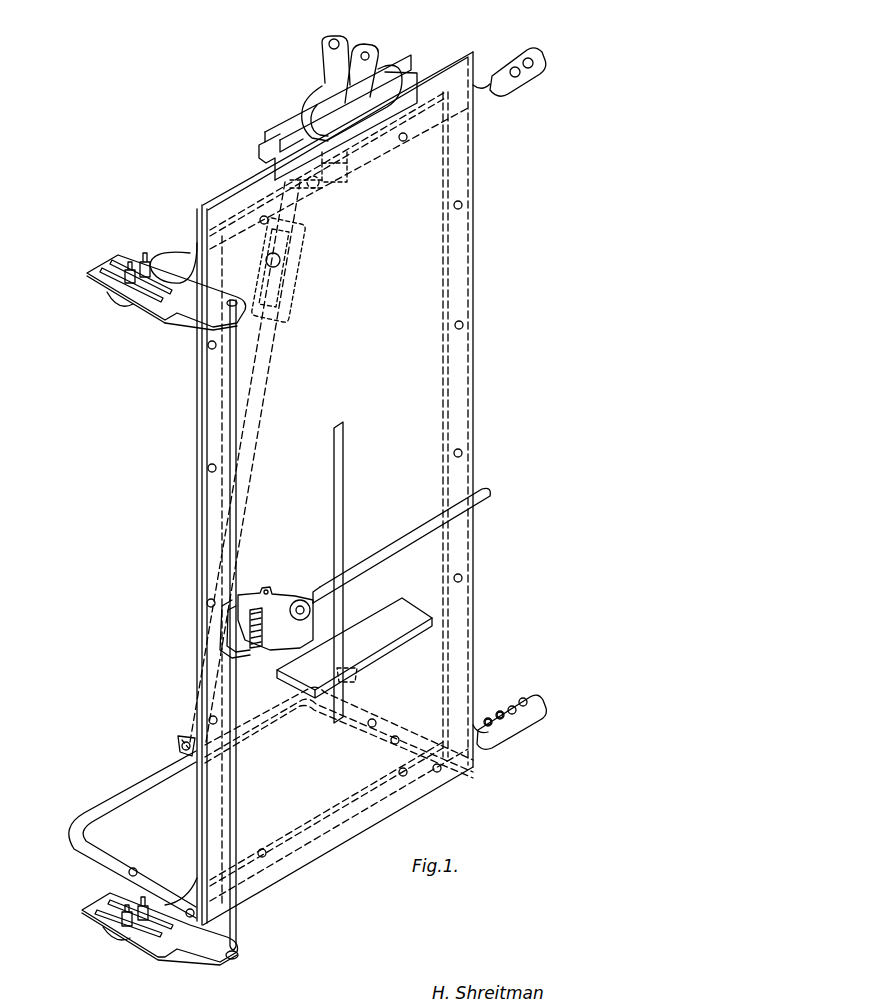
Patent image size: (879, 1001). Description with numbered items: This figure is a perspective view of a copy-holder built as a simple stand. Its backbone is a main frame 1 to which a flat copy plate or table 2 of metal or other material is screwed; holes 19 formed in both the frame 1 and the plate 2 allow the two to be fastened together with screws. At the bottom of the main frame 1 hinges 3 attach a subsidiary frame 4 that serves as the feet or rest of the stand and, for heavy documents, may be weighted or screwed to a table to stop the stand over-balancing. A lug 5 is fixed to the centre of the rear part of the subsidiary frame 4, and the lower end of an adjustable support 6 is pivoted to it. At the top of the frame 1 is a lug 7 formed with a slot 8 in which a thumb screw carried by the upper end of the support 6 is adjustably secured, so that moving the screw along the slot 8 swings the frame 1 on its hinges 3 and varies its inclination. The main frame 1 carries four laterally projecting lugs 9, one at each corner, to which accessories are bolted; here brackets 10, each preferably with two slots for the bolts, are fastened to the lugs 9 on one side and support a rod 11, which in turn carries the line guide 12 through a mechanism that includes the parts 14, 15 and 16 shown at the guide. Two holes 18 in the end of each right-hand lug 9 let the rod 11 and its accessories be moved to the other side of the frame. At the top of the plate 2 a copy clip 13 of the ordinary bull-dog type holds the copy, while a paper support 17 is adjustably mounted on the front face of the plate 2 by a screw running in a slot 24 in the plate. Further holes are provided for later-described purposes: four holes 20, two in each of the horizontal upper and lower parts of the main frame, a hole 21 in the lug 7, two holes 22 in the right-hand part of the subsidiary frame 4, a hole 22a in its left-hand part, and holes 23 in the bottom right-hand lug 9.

The main frame 1 is at (457, 192).
The copy plate or table 2 is at (443, 67).
The hinges 3 is at (463, 770).
The subsidiary frame 4 is at (104, 812).
The lug 5 is at (232, 746).
The adjustable support 6 is at (250, 410).
The lug 7 is at (296, 208).
The slot 8 is at (292, 252).
The laterally projecting lugs 9 is at (160, 262).
The brackets 10 is at (160, 306).
The rod 11 is at (233, 362).
The line guide 12 is at (390, 545).
The copy clip 13 is at (322, 96).
The bracket 14 is at (272, 590).
The clamp 15 is at (250, 657).
The pulley 16 is at (301, 599).
The paper support 17 is at (378, 640).
The holes 18 is at (528, 58).
The holes 19 is at (462, 322).
The holes 20 is at (403, 142).
The hole 21 is at (326, 186).
The holes 22 is at (339, 732).
The hole 22a is at (128, 872).
The holes 23 is at (500, 712).
The slot 24 is at (344, 452).